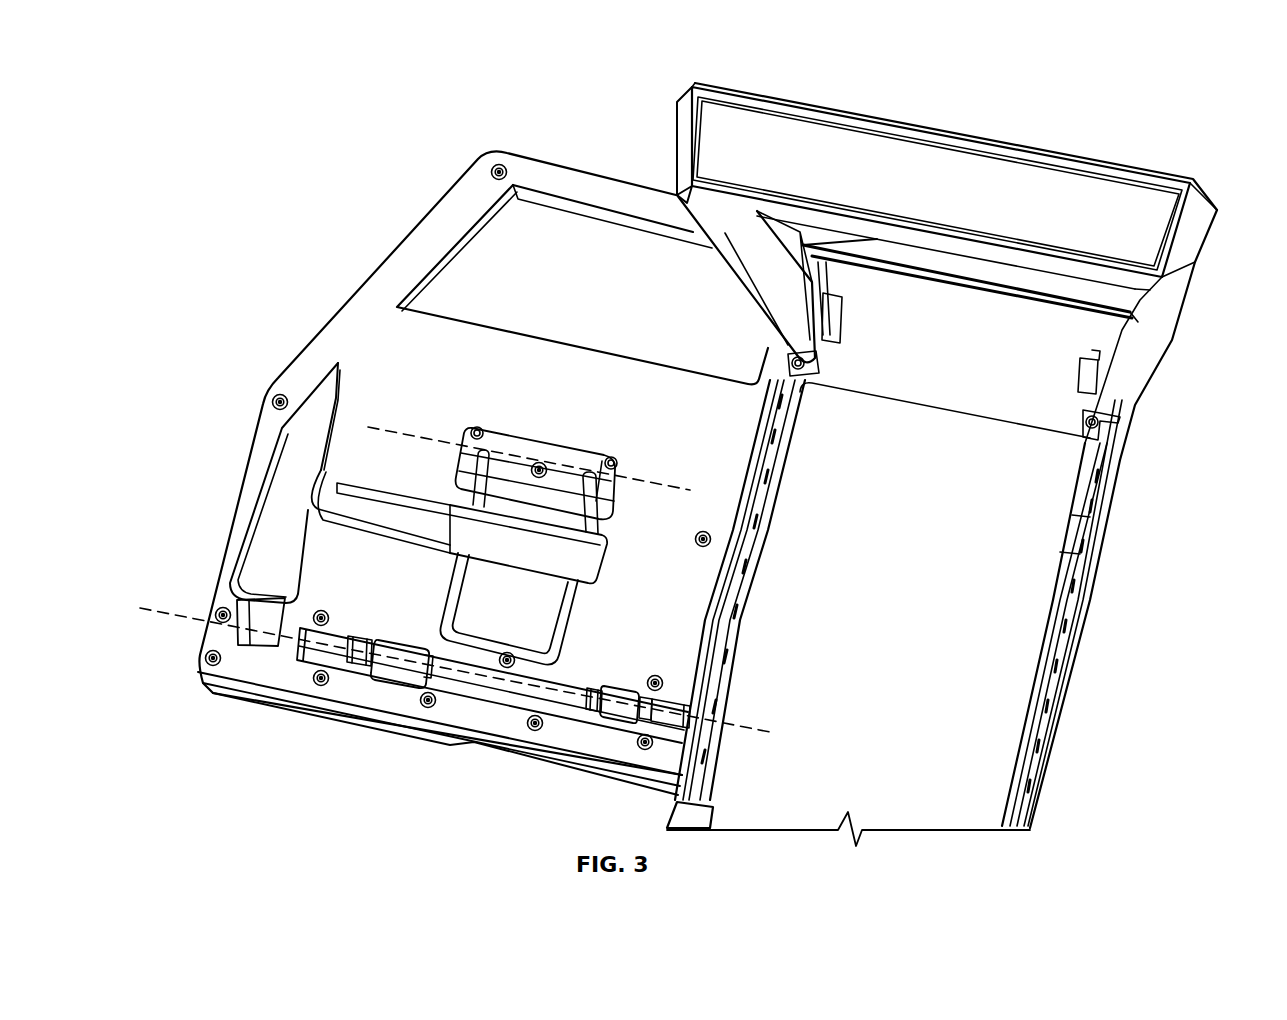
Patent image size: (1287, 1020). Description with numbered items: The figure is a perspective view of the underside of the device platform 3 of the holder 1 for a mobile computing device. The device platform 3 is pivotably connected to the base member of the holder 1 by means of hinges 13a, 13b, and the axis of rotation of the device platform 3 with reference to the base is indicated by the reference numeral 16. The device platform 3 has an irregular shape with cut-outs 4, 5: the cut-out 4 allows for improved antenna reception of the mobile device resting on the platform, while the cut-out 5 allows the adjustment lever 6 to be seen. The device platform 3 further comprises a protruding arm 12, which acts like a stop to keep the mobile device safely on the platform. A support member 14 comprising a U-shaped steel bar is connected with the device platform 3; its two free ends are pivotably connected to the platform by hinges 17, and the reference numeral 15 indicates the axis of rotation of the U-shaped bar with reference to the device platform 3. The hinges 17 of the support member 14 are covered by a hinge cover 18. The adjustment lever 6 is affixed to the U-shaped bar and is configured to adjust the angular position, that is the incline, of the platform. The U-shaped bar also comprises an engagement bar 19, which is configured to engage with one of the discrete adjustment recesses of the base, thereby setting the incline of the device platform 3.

The holder 1 is at (1209, 120).
The device platform 3 is at (330, 333).
The cut-out 4 is at (440, 298).
The cut-out 5 is at (253, 612).
The adjustment lever 6 is at (245, 506).
The protruding arm 12 is at (217, 684).
The hinge 13a is at (390, 670).
The hinge 13b is at (625, 730).
The support member 14 is at (570, 600).
The axis of rotation 15 is at (413, 438).
The axis of rotation 16 is at (288, 642).
The hinges 17 is at (473, 422).
The hinge cover 18 is at (540, 455).
The engagement bar 19 is at (488, 652).